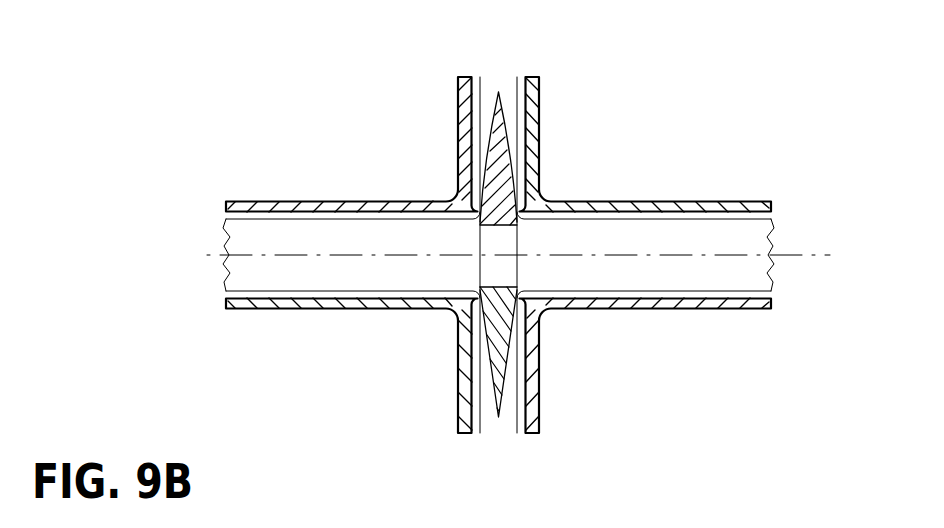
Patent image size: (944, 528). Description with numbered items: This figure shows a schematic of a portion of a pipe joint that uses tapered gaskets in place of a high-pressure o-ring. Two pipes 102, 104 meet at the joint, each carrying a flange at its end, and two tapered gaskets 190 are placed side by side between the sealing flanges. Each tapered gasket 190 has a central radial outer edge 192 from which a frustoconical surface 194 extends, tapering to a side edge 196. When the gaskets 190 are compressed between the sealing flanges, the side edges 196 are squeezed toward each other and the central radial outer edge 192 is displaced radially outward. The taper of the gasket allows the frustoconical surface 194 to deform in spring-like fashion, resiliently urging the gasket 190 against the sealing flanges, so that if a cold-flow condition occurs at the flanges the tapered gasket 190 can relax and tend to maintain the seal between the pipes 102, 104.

The pipe 102 is at (245, 201).
The pipe 104 is at (710, 201).
The tapered gasket 190 is at (500, 82).
The central radial outer edge 192 is at (497, 418).
The frustoconical surface 194 is at (493, 170).
The side edge 196 is at (494, 370).